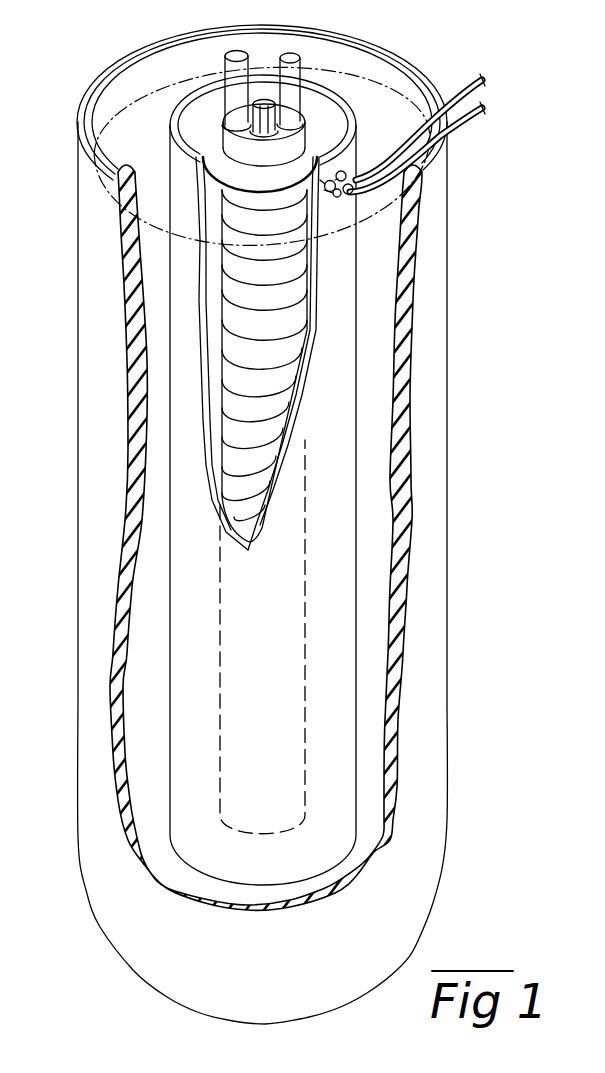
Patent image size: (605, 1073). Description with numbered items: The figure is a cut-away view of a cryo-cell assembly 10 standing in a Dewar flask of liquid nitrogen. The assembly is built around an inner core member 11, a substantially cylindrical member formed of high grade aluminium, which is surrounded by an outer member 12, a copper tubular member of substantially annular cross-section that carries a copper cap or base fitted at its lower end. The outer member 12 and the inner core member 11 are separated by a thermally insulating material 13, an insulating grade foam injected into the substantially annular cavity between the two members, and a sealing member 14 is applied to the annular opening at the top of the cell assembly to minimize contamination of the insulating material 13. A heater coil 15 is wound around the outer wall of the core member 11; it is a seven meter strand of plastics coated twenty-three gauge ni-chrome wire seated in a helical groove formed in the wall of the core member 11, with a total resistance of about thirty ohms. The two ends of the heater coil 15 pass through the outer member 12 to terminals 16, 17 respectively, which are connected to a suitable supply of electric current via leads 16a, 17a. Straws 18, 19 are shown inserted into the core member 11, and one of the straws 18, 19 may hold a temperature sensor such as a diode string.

The cryo-cell assembly 10 is at (152, 123).
The inner core member 11 is at (237, 282).
The outer member 12 is at (192, 518).
The thermally insulating material 13 is at (213, 257).
The sealing member 14 is at (226, 165).
The heater coil 15 is at (250, 318).
The terminal 16 is at (352, 182).
The lead 16a is at (472, 84).
The terminal 17 is at (338, 196).
The lead 17a is at (466, 128).
The straw 18 is at (232, 95).
The straw 19 is at (307, 67).